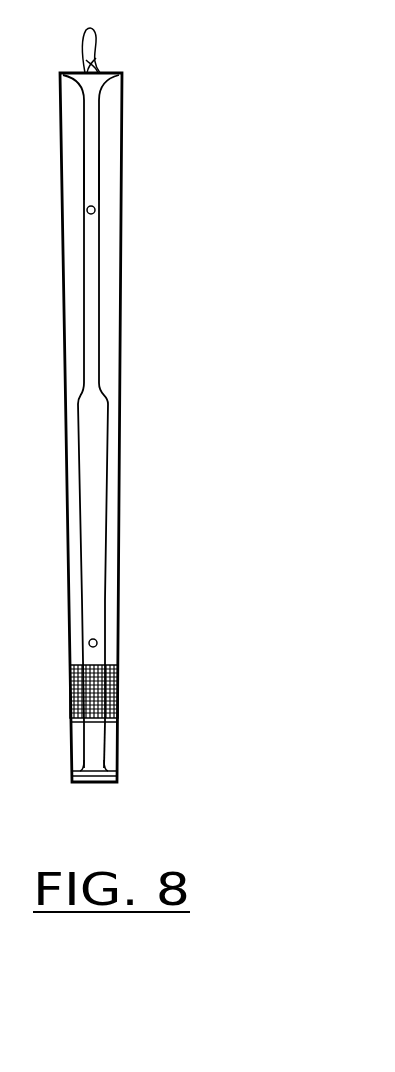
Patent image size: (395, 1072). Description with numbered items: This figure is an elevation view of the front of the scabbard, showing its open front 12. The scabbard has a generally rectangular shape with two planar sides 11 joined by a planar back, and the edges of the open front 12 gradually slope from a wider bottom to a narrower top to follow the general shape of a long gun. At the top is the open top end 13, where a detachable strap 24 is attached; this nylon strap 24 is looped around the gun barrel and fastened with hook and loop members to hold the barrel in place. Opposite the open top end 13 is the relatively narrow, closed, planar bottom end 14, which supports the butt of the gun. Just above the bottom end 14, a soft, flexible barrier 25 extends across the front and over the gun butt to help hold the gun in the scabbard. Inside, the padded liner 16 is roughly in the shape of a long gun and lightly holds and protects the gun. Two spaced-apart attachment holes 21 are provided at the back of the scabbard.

The planar sides 11 is at (122, 345).
The open front 12 is at (90, 445).
The open top end 13 is at (95, 83).
The bottom end 14 is at (95, 782).
The padded liner 16 is at (107, 175).
The attachment holes 21 is at (95, 211).
The detachable strap 24 is at (93, 48).
The barrier 25 is at (118, 698).